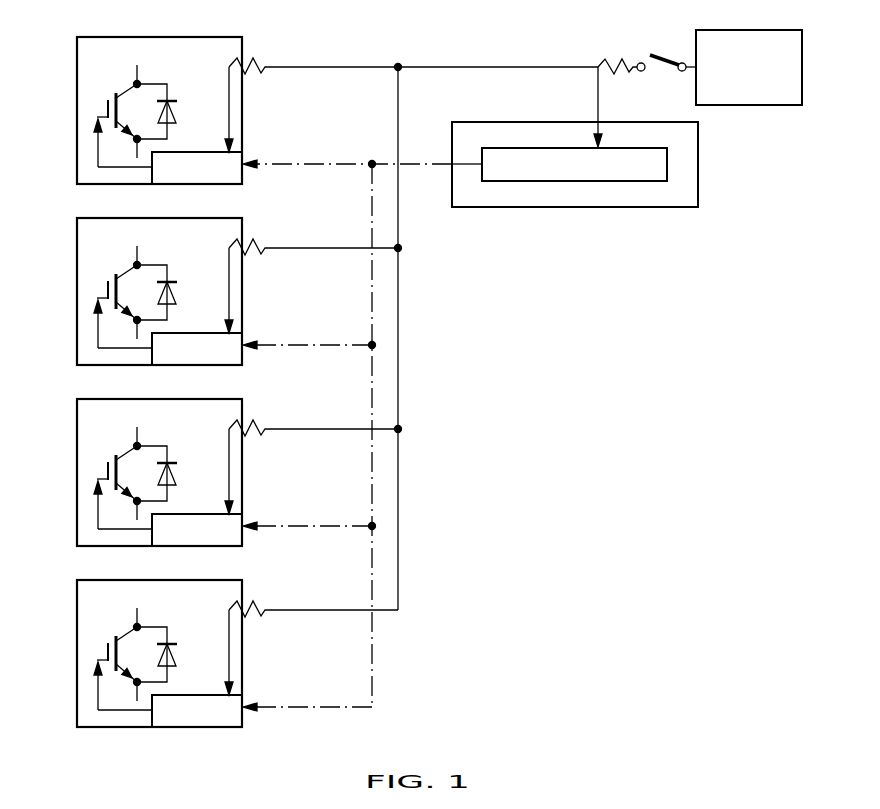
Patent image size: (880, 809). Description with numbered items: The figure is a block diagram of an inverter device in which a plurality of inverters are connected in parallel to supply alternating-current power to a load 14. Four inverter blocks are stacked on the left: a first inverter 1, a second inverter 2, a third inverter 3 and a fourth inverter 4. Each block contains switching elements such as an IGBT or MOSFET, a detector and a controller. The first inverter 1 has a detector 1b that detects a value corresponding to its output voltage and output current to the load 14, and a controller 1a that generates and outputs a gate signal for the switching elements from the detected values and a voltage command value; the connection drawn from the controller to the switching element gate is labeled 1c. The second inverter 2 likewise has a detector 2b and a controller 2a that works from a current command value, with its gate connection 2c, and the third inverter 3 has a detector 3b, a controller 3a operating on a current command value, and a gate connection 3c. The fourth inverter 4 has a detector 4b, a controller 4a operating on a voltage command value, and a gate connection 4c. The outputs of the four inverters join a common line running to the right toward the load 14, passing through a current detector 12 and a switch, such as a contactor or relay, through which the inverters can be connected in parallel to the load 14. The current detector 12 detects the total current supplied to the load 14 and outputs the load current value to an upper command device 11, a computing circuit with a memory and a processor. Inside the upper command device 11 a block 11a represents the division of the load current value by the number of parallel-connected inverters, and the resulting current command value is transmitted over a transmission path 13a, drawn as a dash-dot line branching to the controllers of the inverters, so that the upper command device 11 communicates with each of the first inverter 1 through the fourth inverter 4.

The first inverter 1 is at (77, 65).
The controller 1a is at (203, 152).
The detector 1b is at (229, 67).
The gate signal line of first inverter 1c is at (98, 161).
The second inverter 2 is at (215, 291).
The controller 2a is at (197, 329).
The detector 2b is at (292, 284).
The gate signal line of second inverter 2c is at (92, 326).
The third inverter 3 is at (215, 472).
The controller 3a is at (197, 510).
The detector 3b is at (292, 465).
The gate signal line of third inverter 3c is at (92, 507).
The fourth inverter 4 is at (215, 653).
The controller 4a is at (197, 691).
The detector 4b is at (292, 646).
The gate signal line of fourth inverter 4c is at (92, 688).
The upper command device 11 is at (452, 142).
The division unit (1/number of inverters) 11a is at (632, 148).
The current detector 12 is at (602, 63).
The transmission path 13a is at (344, 163).
The load 14 is at (752, 106).